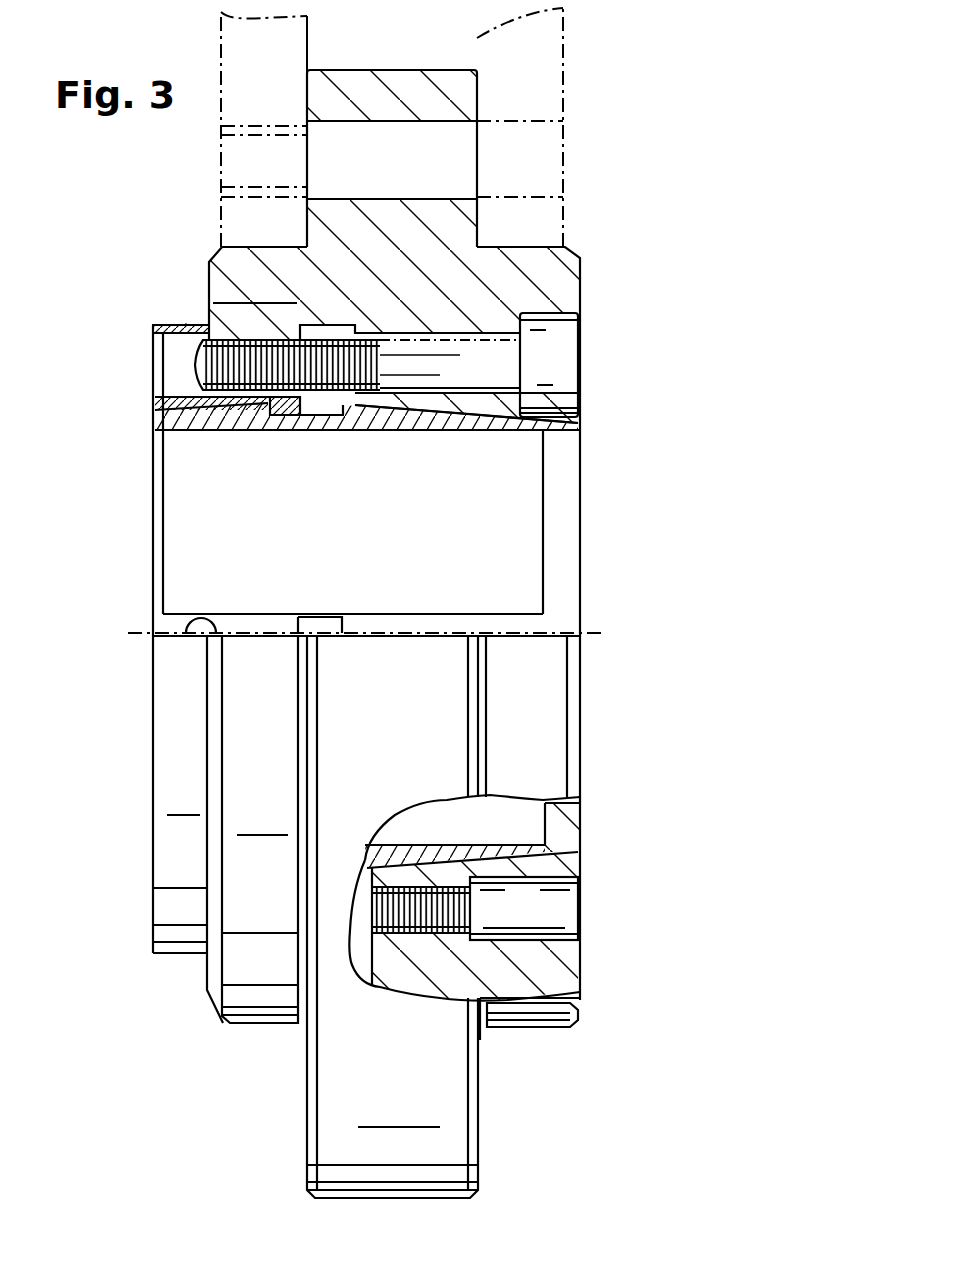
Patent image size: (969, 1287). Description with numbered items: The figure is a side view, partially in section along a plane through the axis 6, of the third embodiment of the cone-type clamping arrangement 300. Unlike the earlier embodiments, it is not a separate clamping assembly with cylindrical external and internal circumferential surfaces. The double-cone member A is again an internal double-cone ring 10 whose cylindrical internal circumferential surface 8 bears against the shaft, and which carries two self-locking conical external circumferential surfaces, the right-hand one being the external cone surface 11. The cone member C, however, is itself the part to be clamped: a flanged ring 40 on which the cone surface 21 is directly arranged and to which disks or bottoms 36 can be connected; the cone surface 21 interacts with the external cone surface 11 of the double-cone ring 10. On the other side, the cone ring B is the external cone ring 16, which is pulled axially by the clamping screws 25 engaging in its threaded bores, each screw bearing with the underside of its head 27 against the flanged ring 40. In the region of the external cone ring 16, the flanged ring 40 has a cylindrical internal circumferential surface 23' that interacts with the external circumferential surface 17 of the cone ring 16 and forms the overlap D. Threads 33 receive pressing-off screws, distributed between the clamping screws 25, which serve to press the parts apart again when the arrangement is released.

The cone-type clamping arrangement 300 is at (660, 272).
The disks or bottoms 36 is at (477, 36).
The flanged ring 40 is at (543, 278).
The external circumferential surface 17 is at (167, 322).
The external cone ring 16 is at (163, 352).
The clamping screw 25 is at (398, 352).
The screw head 27 is at (565, 342).
The cylindrical internal circumferential surface 23' is at (327, 305).
The double-cone ring 10 is at (217, 433).
The cylindrical internal circumferential surface 8 is at (287, 437).
The conical external circumferential surface 11 is at (422, 430).
The cone surface 21 is at (456, 417).
The axis 6 is at (594, 638).
The threads 33 is at (410, 925).
The double-cone member A is at (178, 433).
The cone ring B is at (186, 322).
The cone member C is at (582, 302).
The overlap D is at (272, 303).